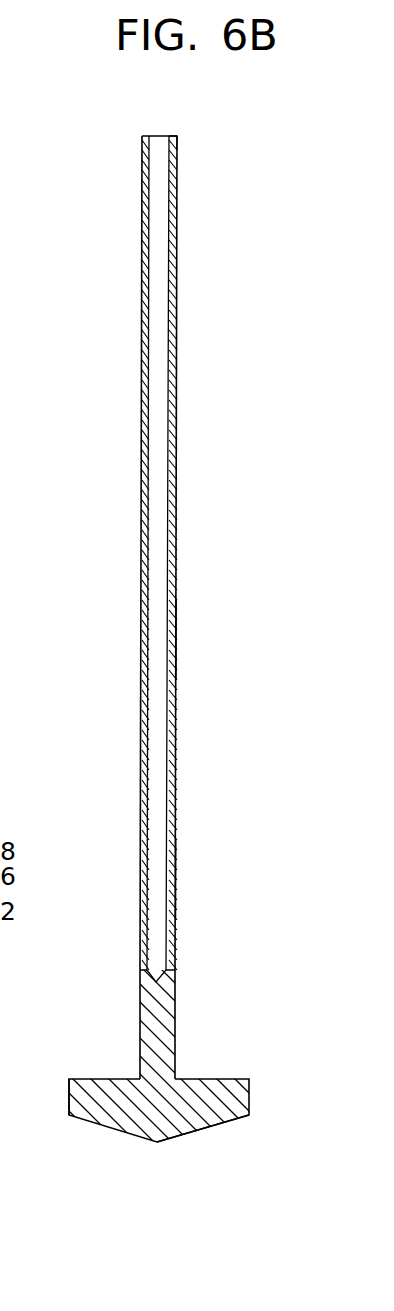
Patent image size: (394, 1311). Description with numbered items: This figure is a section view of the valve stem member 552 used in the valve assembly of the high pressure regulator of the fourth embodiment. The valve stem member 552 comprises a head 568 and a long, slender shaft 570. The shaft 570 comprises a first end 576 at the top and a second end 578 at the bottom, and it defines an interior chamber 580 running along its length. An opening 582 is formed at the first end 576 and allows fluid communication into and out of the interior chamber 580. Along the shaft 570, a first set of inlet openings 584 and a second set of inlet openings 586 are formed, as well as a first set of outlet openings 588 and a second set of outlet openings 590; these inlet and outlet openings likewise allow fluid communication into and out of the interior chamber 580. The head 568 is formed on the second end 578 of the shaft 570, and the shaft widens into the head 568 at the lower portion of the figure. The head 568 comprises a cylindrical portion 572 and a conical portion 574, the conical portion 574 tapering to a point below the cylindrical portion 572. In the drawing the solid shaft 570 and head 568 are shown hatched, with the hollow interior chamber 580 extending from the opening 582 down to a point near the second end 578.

The first end 576 is at (170, 121).
The opening 582 is at (171, 134).
The shaft 570 is at (190, 470).
The valve stem member 552 is at (184, 772).
The interior chamber 580 is at (162, 712).
The first set of inlet openings 584 is at (176, 521).
The second set of inlet openings 586 is at (176, 638).
The first set of outlet openings 588 is at (176, 878).
The second set of outlet openings 590 is at (178, 960).
The second end 578 is at (190, 1052).
The head 568 is at (128, 1124).
The conical portion 574 is at (208, 1128).
The cylindrical portion 572 is at (60, 1100).